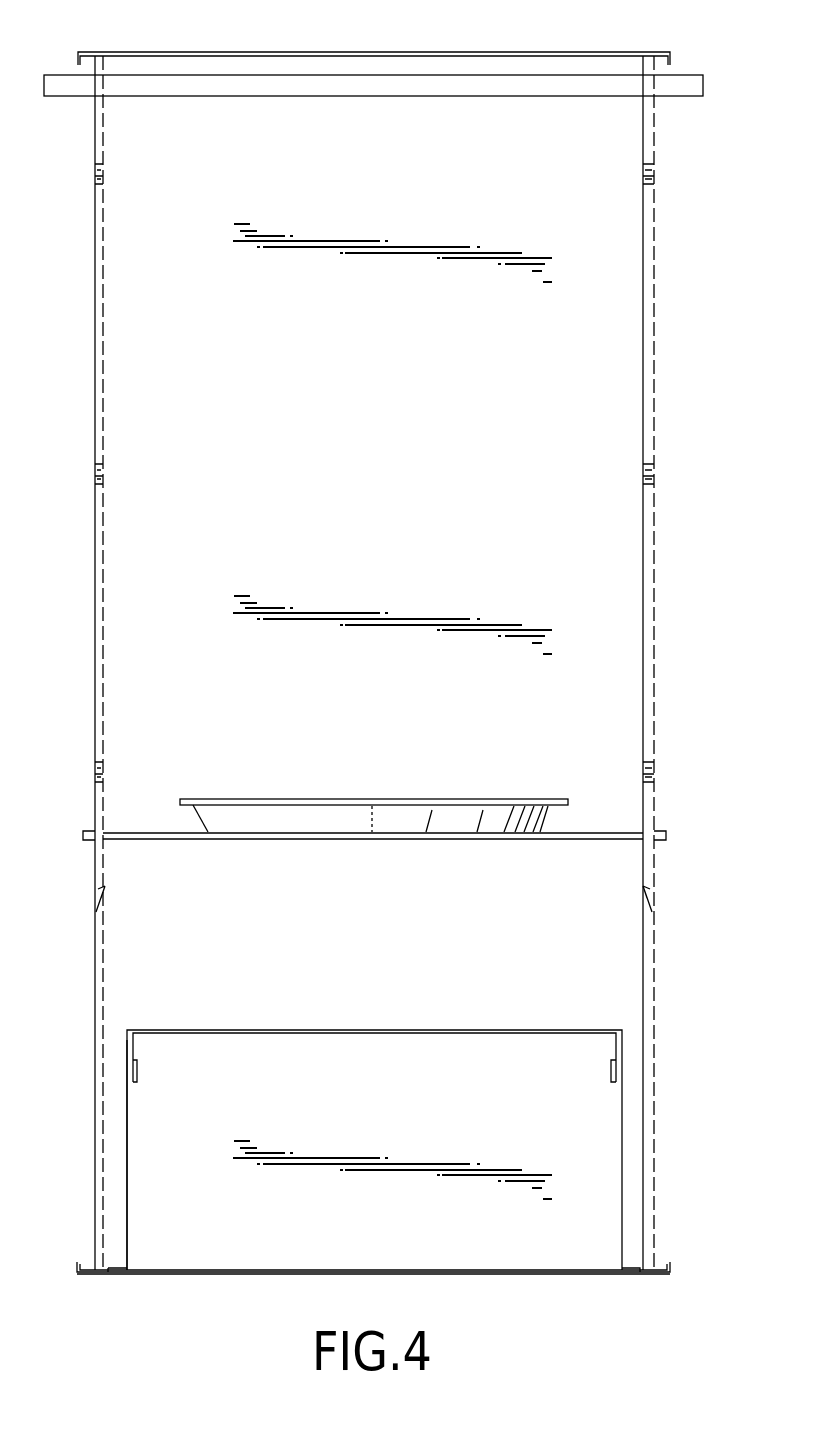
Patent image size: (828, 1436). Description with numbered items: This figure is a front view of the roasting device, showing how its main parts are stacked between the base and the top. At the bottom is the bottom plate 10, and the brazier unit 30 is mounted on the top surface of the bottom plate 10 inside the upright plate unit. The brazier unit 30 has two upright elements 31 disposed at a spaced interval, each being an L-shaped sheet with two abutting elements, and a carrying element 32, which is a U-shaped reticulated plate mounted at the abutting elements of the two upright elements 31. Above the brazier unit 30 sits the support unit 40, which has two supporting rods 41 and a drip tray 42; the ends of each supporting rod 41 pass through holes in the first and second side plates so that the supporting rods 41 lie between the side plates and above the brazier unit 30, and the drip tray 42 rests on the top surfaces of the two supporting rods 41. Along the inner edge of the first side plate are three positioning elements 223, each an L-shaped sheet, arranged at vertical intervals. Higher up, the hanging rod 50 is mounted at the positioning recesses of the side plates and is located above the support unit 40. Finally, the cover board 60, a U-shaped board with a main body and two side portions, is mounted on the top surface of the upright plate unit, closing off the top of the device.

The bottom plate 10 is at (202, 1280).
The brazier unit 30 is at (374, 1100).
The upright elements 31 is at (127, 1141).
The carrying element 32 is at (335, 1030).
The support unit 40 is at (374, 806).
The supporting rods 41 is at (372, 807).
The drip tray 42 is at (447, 814).
The hanging rod 50 is at (340, 85).
The cover board 60 is at (470, 50).
The positioning elements 223 is at (103, 176).